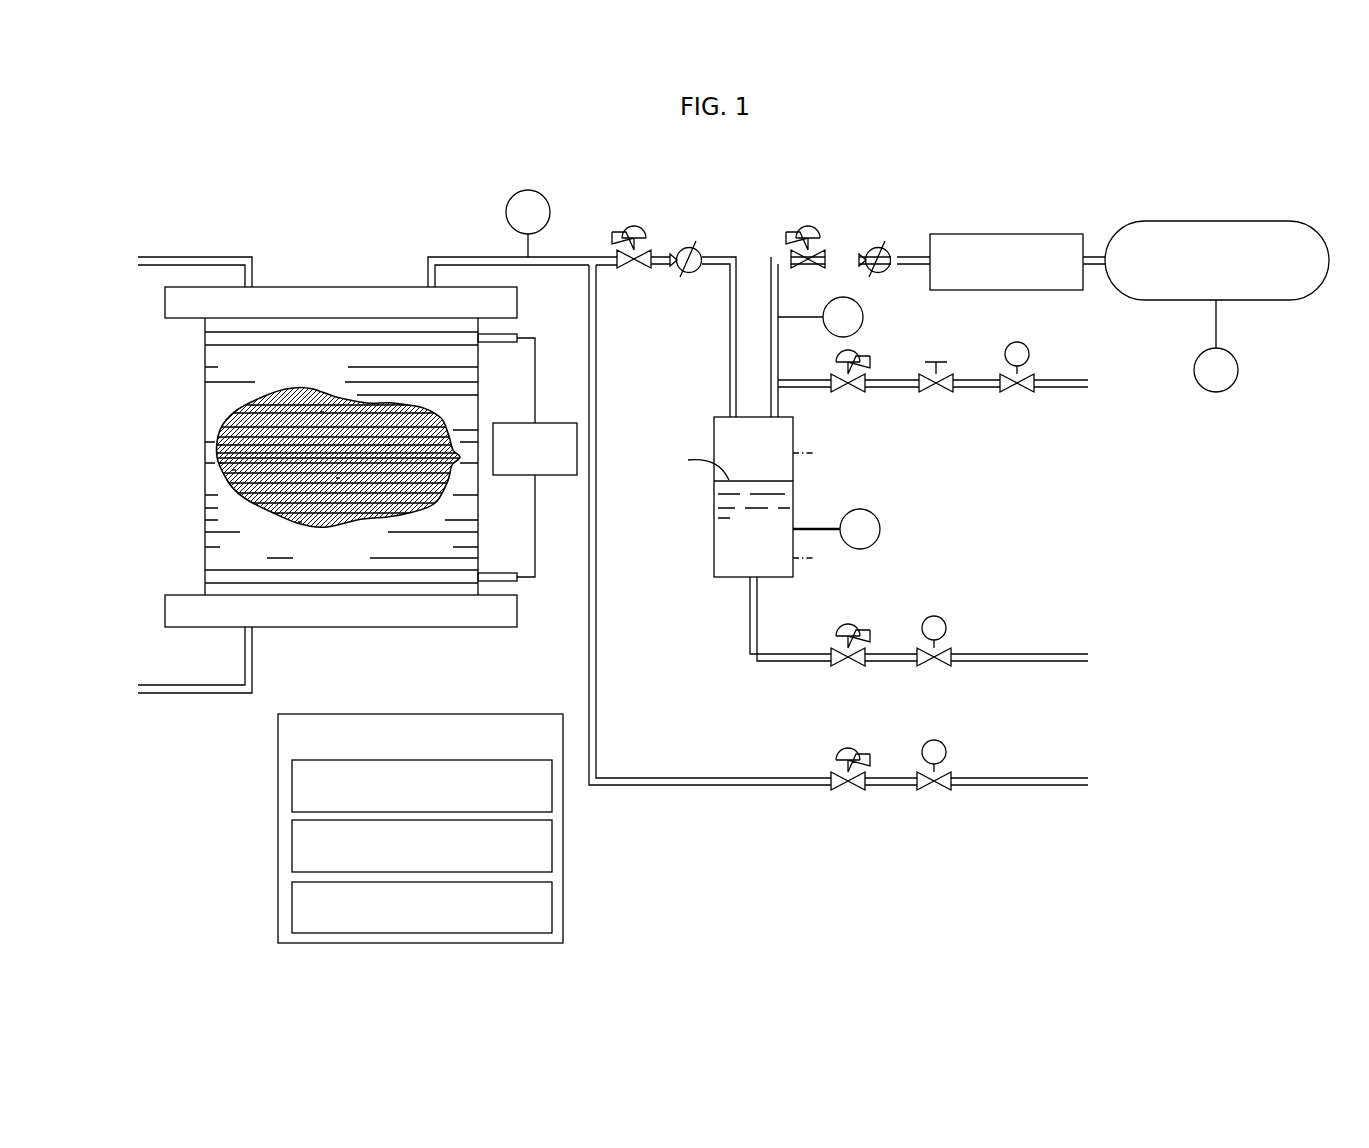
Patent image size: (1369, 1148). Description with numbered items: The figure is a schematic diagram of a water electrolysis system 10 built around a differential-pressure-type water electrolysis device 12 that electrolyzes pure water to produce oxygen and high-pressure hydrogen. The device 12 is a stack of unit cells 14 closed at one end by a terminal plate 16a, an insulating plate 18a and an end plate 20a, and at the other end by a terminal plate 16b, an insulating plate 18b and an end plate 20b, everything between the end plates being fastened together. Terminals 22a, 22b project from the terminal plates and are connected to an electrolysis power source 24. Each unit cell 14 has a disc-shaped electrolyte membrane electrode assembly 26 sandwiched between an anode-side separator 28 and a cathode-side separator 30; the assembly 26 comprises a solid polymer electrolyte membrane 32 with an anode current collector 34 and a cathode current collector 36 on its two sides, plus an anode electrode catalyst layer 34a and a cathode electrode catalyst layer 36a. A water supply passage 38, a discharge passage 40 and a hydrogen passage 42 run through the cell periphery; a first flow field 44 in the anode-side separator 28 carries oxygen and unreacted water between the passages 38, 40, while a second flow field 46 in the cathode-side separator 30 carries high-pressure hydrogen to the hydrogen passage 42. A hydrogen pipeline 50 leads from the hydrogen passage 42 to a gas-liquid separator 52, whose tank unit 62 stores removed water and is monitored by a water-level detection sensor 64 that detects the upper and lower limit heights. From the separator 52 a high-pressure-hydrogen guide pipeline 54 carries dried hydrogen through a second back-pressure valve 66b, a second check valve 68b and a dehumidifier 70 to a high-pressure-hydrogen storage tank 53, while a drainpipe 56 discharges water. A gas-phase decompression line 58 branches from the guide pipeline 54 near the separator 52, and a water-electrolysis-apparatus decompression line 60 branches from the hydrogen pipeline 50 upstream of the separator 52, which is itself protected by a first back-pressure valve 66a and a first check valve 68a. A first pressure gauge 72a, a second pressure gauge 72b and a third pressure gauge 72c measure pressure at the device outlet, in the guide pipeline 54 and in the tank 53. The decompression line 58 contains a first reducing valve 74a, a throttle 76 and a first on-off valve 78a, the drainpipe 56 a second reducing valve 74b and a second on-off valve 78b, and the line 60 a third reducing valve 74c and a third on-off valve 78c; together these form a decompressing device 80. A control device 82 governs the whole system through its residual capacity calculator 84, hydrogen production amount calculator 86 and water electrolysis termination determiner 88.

The water electrolysis system 10 is at (158, 185).
The water electrolysis device 12 is at (292, 240).
The unit cell 14 is at (203, 504).
The terminal plate 16a is at (363, 340).
The terminal plate 16b is at (432, 575).
The insulating plate 18a is at (332, 327).
The insulating plate 18b is at (335, 588).
The end plate 20a is at (457, 281).
The end plate 20b is at (489, 629).
The terminal 22a is at (493, 343).
The terminal 22b is at (497, 575).
The electrolysis power source 24 is at (556, 423).
The electrolyte membrane electrode assembly 26 is at (163, 420).
The anode-side separator 28 is at (337, 529).
The cathode-side separator 30 is at (299, 523).
The solid polymer electrolyte membrane 32 is at (218, 455).
The anode current collector 34 is at (220, 445).
The anode electrode catalyst layer 34a is at (323, 412).
The cathode current collector 36 is at (220, 463).
The cathode electrode catalyst layer 36a is at (338, 478).
The water supply passage 38 is at (253, 628).
The discharge passage 40 is at (255, 286).
The hydrogen passage 42 is at (427, 283).
The first flow field 44 is at (388, 437).
The second flow field 46 is at (235, 470).
The hydrogen pipeline 50 is at (617, 267).
The gas-liquid separator 52 is at (869, 444).
The high-pressure-hydrogen storage tank 53 is at (1270, 221).
The high-pressure-hydrogen guide pipeline 54 is at (911, 256).
The drainpipe 56 is at (750, 627).
The gas-phase decompression line 58 is at (812, 389).
The water-electrolysis-apparatus decompression line 60 is at (598, 667).
The tank unit 62 is at (715, 535).
The water-level detection sensor 64 is at (862, 509).
The first back-pressure valve 66a is at (634, 226).
The second back-pressure valve 66b is at (808, 226).
The first check valve 68a is at (687, 248).
The second check valve 68b is at (876, 248).
The dehumidifier 70 is at (1062, 234).
The first pressure gauge 72a is at (543, 196).
The second pressure gauge 72b is at (864, 315).
The third pressure gauge 72c is at (1233, 356).
The first reducing valve 74a is at (852, 393).
The second reducing valve 74b is at (841, 624).
The third reducing valve 74c is at (841, 748).
The throttle 76 is at (938, 393).
The first on-off valve 78a is at (1018, 393).
The second on-off valve 78b is at (930, 616).
The third on-off valve 78c is at (930, 740).
The decompressing device 80 is at (899, 679).
The control device 82 is at (391, 827).
The residual capacity calculator 84 is at (292, 782).
The hydrogen production amount calculator 86 is at (292, 842).
The water electrolysis termination determiner 88 is at (292, 902).